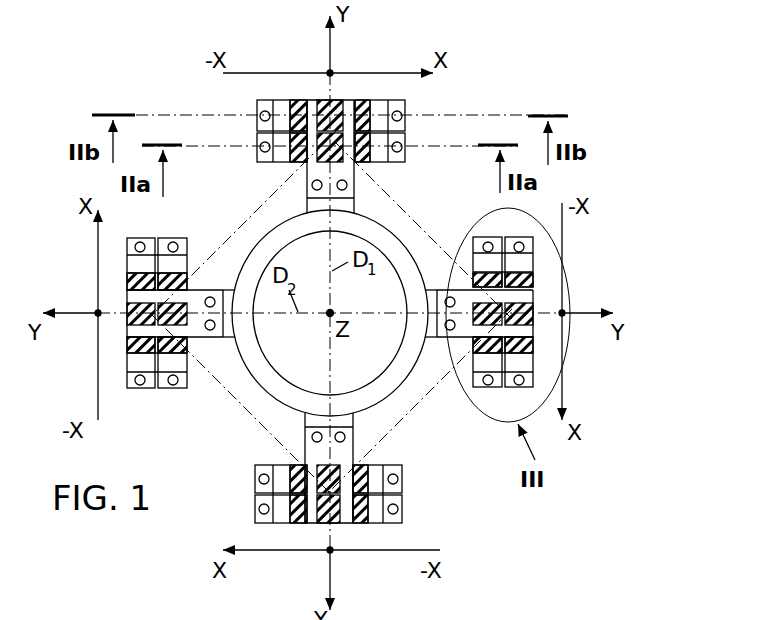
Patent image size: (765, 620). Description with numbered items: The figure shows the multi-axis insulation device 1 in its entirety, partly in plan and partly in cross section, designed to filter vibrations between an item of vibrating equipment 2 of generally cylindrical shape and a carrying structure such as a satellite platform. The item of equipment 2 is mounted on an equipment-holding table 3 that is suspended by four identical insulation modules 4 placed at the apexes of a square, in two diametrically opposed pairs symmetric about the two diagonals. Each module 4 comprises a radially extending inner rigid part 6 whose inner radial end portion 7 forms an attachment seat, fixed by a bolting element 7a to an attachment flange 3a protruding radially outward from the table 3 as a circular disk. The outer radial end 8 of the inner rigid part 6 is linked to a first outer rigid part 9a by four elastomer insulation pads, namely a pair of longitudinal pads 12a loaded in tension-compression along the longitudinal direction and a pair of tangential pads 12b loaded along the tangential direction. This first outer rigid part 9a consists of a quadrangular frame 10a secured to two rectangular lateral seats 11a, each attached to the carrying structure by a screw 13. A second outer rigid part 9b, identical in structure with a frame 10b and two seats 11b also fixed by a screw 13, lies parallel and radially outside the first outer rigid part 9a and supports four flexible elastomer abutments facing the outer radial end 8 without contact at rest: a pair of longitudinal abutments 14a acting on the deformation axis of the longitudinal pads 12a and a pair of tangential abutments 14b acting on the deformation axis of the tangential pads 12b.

The multi-axis insulation device 1 is at (527, 73).
The item of vibrating equipment 2 is at (302, 272).
The equipment-holding table 3 is at (391, 242).
The attachment flange 3a is at (232, 288).
The insulation module 4 is at (430, 102).
The inner rigid part 6 is at (344, 170).
The inner radial end portion 7 is at (308, 192).
The bolting element 7a is at (340, 432).
The outer radial end 8 is at (345, 110).
The first outer rigid part 9a is at (411, 489).
The second outer rigid part 9b is at (410, 511).
The quadrangular frame 10a is at (280, 480).
The frame 10b is at (130, 360).
The lateral seat 11a is at (258, 468).
The seat 11b is at (132, 252).
The longitudinal pad 12a is at (316, 472).
The tangential pad 12b is at (303, 465).
The screw 13 is at (262, 477).
The longitudinal abutment 14a is at (527, 308).
The tangential abutment 14b is at (530, 273).